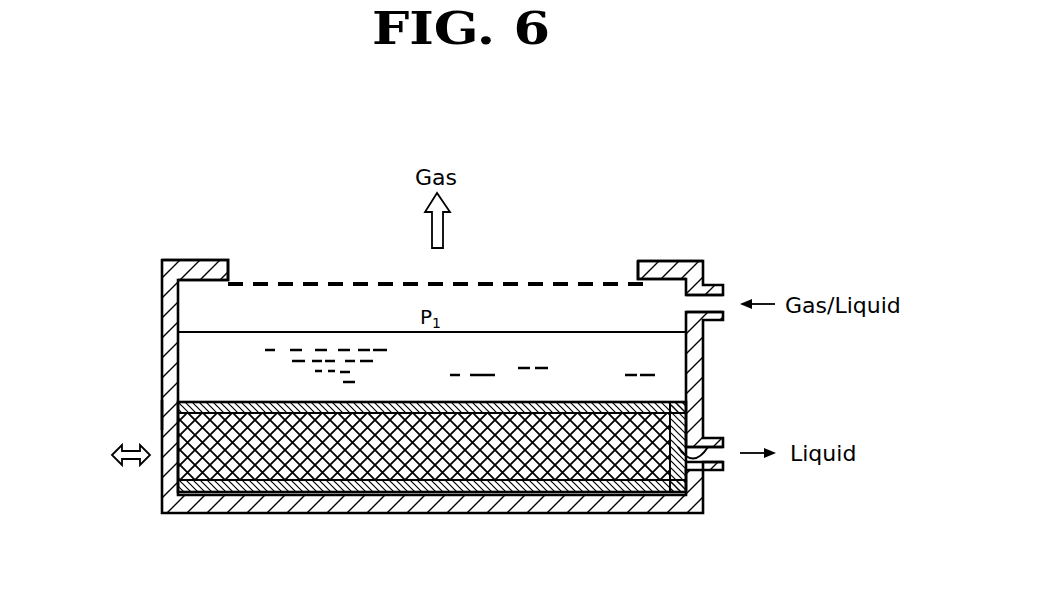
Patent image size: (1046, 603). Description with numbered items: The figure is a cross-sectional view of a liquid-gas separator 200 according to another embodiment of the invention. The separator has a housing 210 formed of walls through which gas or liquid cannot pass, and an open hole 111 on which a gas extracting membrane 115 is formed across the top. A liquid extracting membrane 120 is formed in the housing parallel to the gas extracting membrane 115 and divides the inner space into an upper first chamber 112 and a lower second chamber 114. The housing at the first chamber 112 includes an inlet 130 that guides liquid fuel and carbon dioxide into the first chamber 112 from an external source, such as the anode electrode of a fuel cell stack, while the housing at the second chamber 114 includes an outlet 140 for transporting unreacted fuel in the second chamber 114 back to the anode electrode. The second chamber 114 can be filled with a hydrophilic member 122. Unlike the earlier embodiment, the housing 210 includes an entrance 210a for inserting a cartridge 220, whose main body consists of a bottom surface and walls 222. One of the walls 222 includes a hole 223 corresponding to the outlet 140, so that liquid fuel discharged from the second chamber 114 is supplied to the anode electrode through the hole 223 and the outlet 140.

The liquid-gas separator 200 is at (678, 203).
The housing 210 is at (652, 503).
The entrance 210a is at (162, 415).
The open hole 111 is at (636, 264).
The first chamber 112 is at (216, 310).
The gas extracting membrane 115 is at (299, 283).
The inlet 130 is at (723, 287).
The outlet 140 is at (717, 472).
The cartridge 220 is at (147, 484).
The walls 222 is at (700, 410).
The hole 223 is at (706, 442).
The second chamber 114 is at (380, 455).
The hydrophilic member 122 is at (286, 457).
The liquid extracting membrane 120 is at (483, 407).